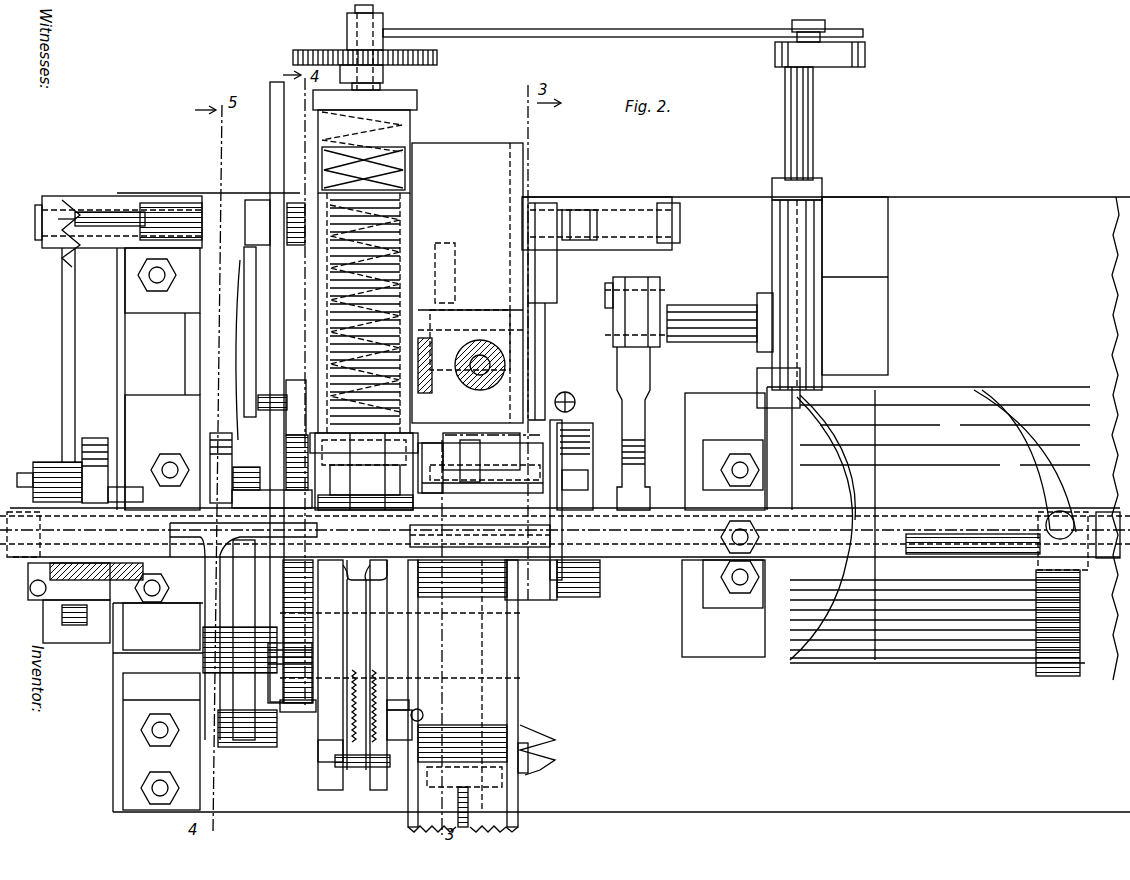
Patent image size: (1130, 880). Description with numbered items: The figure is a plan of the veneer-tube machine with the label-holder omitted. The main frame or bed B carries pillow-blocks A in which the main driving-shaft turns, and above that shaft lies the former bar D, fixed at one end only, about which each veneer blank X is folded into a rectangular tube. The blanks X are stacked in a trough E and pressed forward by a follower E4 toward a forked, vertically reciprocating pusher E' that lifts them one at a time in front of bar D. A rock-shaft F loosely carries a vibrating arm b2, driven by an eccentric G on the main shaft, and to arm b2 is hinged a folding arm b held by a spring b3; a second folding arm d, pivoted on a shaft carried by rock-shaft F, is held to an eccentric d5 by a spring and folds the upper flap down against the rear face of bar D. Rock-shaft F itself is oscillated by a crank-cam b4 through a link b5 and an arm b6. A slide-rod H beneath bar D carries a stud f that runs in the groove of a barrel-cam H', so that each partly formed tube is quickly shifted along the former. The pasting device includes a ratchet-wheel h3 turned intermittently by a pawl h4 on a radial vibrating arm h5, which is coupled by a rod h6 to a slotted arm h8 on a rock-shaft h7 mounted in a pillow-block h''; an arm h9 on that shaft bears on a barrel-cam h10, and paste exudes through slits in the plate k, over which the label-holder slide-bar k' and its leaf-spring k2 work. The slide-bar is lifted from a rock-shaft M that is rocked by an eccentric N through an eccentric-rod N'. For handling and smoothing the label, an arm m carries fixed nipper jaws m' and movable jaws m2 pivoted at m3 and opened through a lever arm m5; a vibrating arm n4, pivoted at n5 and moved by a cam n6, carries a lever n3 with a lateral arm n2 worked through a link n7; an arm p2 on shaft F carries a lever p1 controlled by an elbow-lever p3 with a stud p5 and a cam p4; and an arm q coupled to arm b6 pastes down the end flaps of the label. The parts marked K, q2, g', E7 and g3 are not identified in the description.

The main frame or bed B is at (621, 502).
The pillow-block h'' is at (855, 286).
The rock-shaft h7 is at (807, 228).
The slotted arm h8 is at (865, 50).
The rod h6 is at (426, 31).
The radial vibrating arm h5 is at (348, 43).
The ratchet-wheel h3 is at (438, 59).
The pawl h4 is at (388, 66).
The level plate k is at (378, 271).
The leaf-spring k2 is at (363, 168).
The slide-bar k' is at (435, 371).
The casing K is at (467, 283).
The rock-shaft F is at (680, 222).
The vibrating arm b2 is at (579, 225).
The folding arm b is at (545, 391).
The spring b3 is at (568, 393).
The eccentric d5 is at (575, 462).
The eccentric-rod N' is at (646, 299).
The rock-shaft M is at (702, 312).
The eccentric N is at (644, 428).
The pillow-block A is at (760, 582).
The arm h9 is at (771, 382).
The barrel-cam h10 is at (811, 523).
The barrel-cam H' is at (928, 531).
The slide-rod H is at (973, 548).
The roller or stud f is at (1058, 514).
The former bar D is at (565, 546).
The spring q2 is at (60, 258).
The arm b6 is at (70, 336).
The link b5 is at (46, 483).
The crank-cam b4 is at (112, 470).
The arm q is at (88, 643).
The lateral arm n2 is at (243, 624).
The lever n3 is at (244, 640).
The vibrating arm n4 is at (230, 652).
The pivot n5 is at (266, 688).
The link n7 is at (240, 745).
The cam n6 is at (221, 468).
The lever p1 is at (278, 392).
The vibrating arm p2 is at (294, 202).
The elbow-lever p3 is at (248, 380).
The stud p5 is at (282, 396).
The cam or eccentric p4 is at (272, 471).
The gear g' is at (364, 471).
The folding arm d is at (473, 463).
The pusher E' is at (480, 541).
The eccentric G is at (552, 583).
The trough E is at (481, 696).
The blank X is at (455, 730).
The follower E4 is at (435, 790).
The rod E7 is at (468, 800).
The lever arm m5 is at (298, 643).
The fixed jaws m' is at (352, 675).
The movable jaws m2 is at (340, 648).
The arm m is at (340, 760).
The pivot m3 is at (405, 723).
The fork g3 is at (360, 578).